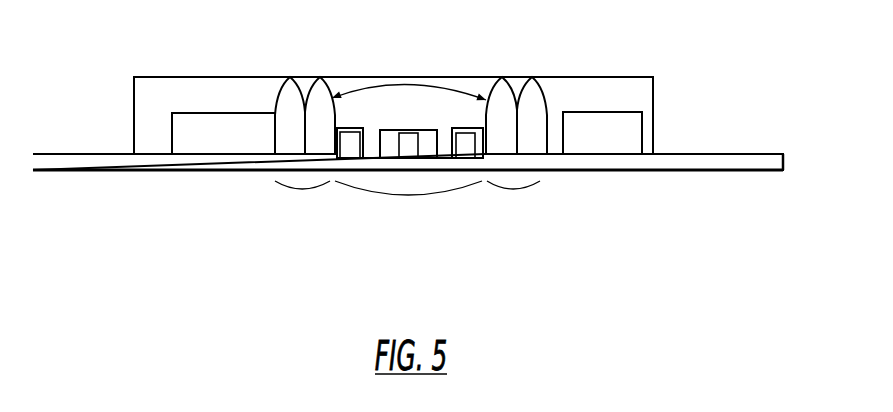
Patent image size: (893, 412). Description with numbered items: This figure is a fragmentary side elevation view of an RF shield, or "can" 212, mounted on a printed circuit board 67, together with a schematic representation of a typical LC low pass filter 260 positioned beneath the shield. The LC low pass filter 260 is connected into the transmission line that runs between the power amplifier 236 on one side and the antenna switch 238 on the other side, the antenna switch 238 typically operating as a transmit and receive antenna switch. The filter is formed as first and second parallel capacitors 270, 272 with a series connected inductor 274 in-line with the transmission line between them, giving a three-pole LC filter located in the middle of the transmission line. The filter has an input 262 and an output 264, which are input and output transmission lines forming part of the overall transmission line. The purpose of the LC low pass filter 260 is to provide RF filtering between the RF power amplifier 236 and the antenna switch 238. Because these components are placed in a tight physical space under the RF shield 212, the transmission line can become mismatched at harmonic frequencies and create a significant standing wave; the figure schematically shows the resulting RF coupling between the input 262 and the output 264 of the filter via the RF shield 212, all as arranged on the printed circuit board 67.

The printed circuit board 67 is at (697, 171).
The RF shield 212 is at (490, 77).
The power amplifier 236 is at (220, 113).
The antenna switch 238 is at (603, 112).
The LC low pass filter 260 is at (427, 304).
The input 262 is at (302, 196).
The output 264 is at (513, 196).
The first parallel capacitor 270 is at (350, 128).
The second parallel capacitor 272 is at (468, 128).
The series connected inductor 274 is at (423, 133).